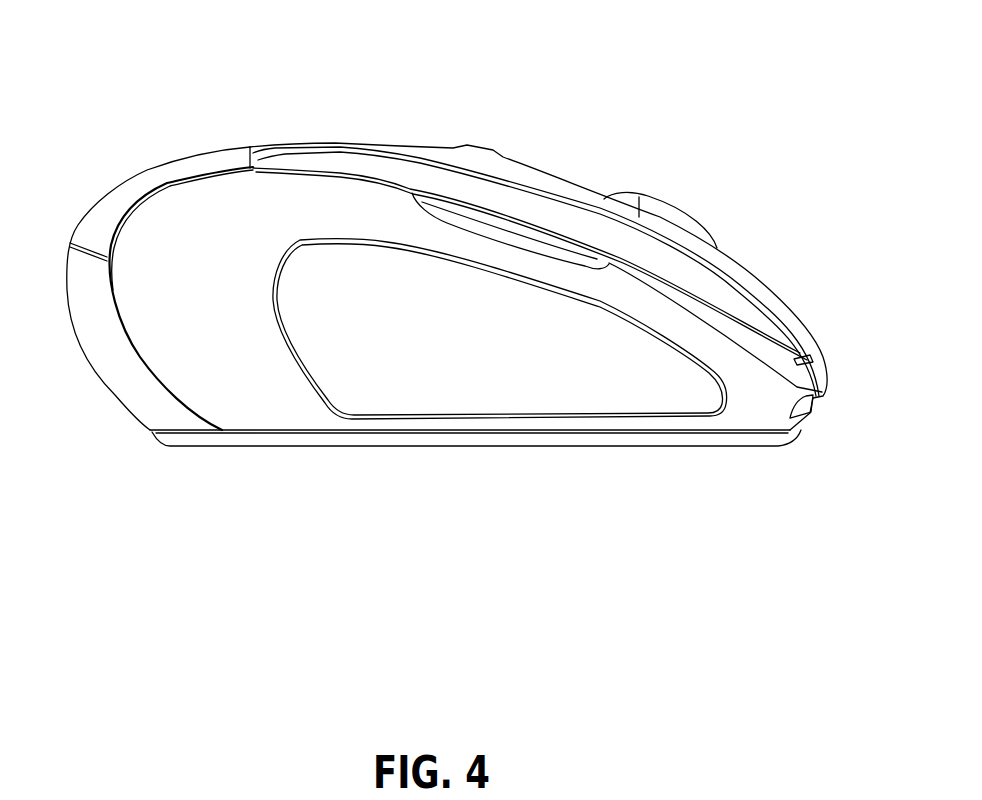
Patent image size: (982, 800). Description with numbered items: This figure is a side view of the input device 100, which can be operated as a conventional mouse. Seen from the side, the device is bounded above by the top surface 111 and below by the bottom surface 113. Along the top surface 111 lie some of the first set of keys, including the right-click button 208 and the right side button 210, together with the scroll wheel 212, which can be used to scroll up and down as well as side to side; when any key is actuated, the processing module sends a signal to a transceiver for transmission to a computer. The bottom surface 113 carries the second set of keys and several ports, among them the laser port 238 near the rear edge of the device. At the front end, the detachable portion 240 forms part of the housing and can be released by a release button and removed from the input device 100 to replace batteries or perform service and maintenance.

The input device 100 is at (259, 84).
The top surface 111 is at (338, 136).
The bottom surface 113 is at (342, 460).
The right-click button 208 is at (727, 283).
The right side button 210 is at (490, 220).
The scroll wheel 212 is at (676, 214).
The laser port 238 is at (807, 420).
The detachable portion 240 is at (140, 397).